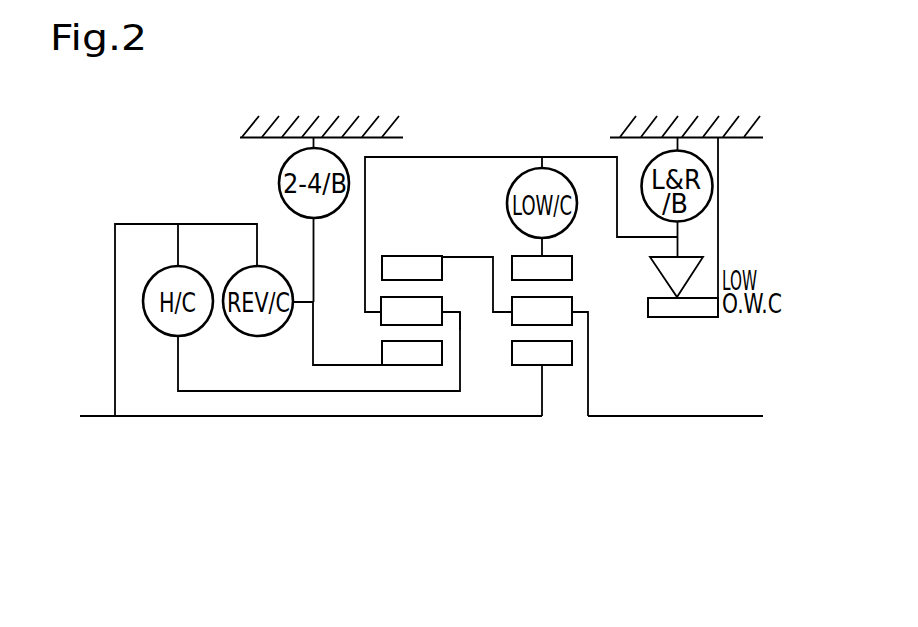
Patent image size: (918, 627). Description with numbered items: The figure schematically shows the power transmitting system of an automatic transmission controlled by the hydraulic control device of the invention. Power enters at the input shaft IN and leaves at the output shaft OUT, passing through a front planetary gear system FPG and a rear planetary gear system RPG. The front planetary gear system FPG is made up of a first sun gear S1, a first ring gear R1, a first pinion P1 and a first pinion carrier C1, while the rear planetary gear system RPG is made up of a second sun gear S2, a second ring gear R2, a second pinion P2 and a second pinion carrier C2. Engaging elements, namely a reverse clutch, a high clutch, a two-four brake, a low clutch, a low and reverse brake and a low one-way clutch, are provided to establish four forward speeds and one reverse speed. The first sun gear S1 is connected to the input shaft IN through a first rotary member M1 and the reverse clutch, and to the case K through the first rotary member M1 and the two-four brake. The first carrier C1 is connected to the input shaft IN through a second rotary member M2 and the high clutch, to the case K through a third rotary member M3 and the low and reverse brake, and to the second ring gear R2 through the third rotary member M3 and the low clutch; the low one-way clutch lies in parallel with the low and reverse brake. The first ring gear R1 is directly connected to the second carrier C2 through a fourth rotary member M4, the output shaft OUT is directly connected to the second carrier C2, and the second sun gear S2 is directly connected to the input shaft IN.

The case K is at (388, 142).
The input shaft IN is at (311, 320).
The output shaft OUT is at (675, 401).
The first rotary member M1 is at (337, 291).
The second rotary member M2 is at (319, 351).
The third rotary member M3 is at (521, 233).
The fourth rotary member M4 is at (477, 268).
The first ring gear R1 is at (412, 268).
The first pinion P1 is at (432, 296).
The first sun gear S1 is at (412, 354).
The first pinion carrier C1 is at (457, 311).
The second ring gear R2 is at (542, 268).
The second pinion P2 is at (562, 296).
The second sun gear S2 is at (542, 377).
The second pinion carrier C2 is at (585, 313).
The front planetary gear system FPG is at (419, 438).
The rear planetary gear system RPG is at (543, 438).